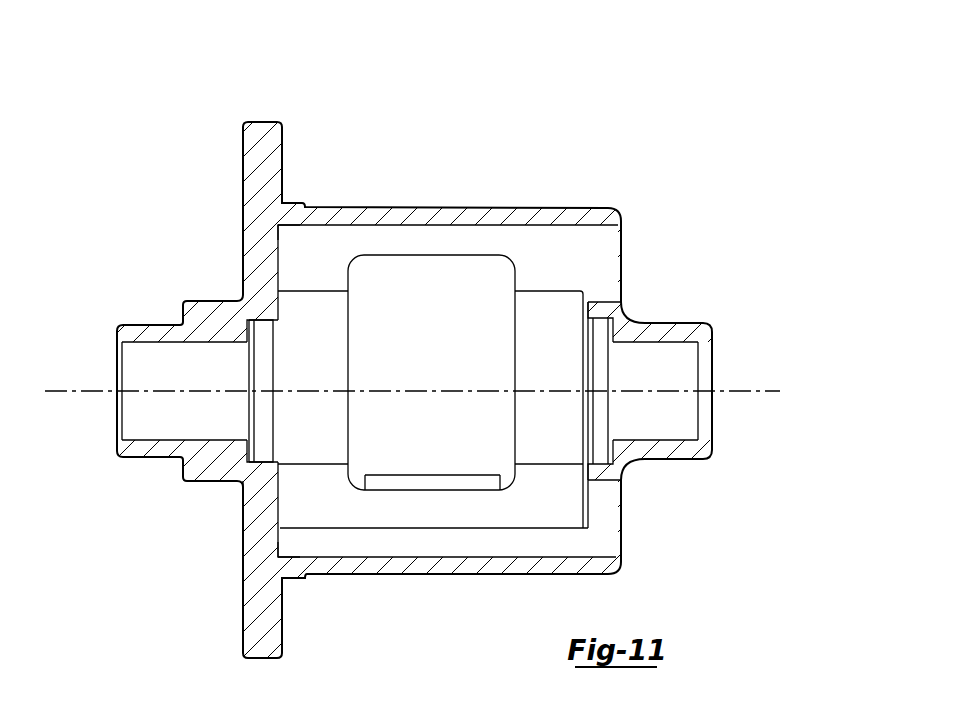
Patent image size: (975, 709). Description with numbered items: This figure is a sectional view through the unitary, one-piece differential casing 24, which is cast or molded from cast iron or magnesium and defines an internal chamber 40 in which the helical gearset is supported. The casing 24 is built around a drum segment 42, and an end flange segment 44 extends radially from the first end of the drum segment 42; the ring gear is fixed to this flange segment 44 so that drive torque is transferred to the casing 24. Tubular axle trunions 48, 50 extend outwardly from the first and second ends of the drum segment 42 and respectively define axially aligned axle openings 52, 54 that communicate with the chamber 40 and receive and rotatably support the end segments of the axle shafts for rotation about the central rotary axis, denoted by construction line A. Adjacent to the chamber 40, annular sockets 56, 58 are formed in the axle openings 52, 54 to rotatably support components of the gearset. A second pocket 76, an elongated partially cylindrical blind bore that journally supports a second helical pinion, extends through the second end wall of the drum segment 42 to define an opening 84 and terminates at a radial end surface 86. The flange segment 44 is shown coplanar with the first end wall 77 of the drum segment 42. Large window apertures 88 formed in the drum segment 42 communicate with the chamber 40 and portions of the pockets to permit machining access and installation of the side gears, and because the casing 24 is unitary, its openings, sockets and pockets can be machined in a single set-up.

The casing 24 is at (415, 208).
The internal chamber 40 is at (470, 352).
The drum segment 42 is at (462, 213).
The end flange segment 44 is at (283, 150).
The axle trunion 48 is at (148, 333).
The axle trunion 50 is at (675, 327).
The axle opening 52 is at (160, 442).
The axle opening 54 is at (665, 442).
The annular socket 56 is at (266, 322).
The annular socket 58 is at (598, 462).
The second pocket 76 is at (542, 226).
The first end wall 77 is at (257, 517).
The opening 84 is at (622, 260).
The radial end surface 86 is at (277, 270).
The window aperture 88 is at (414, 485).
The central rotary axis A is at (728, 391).